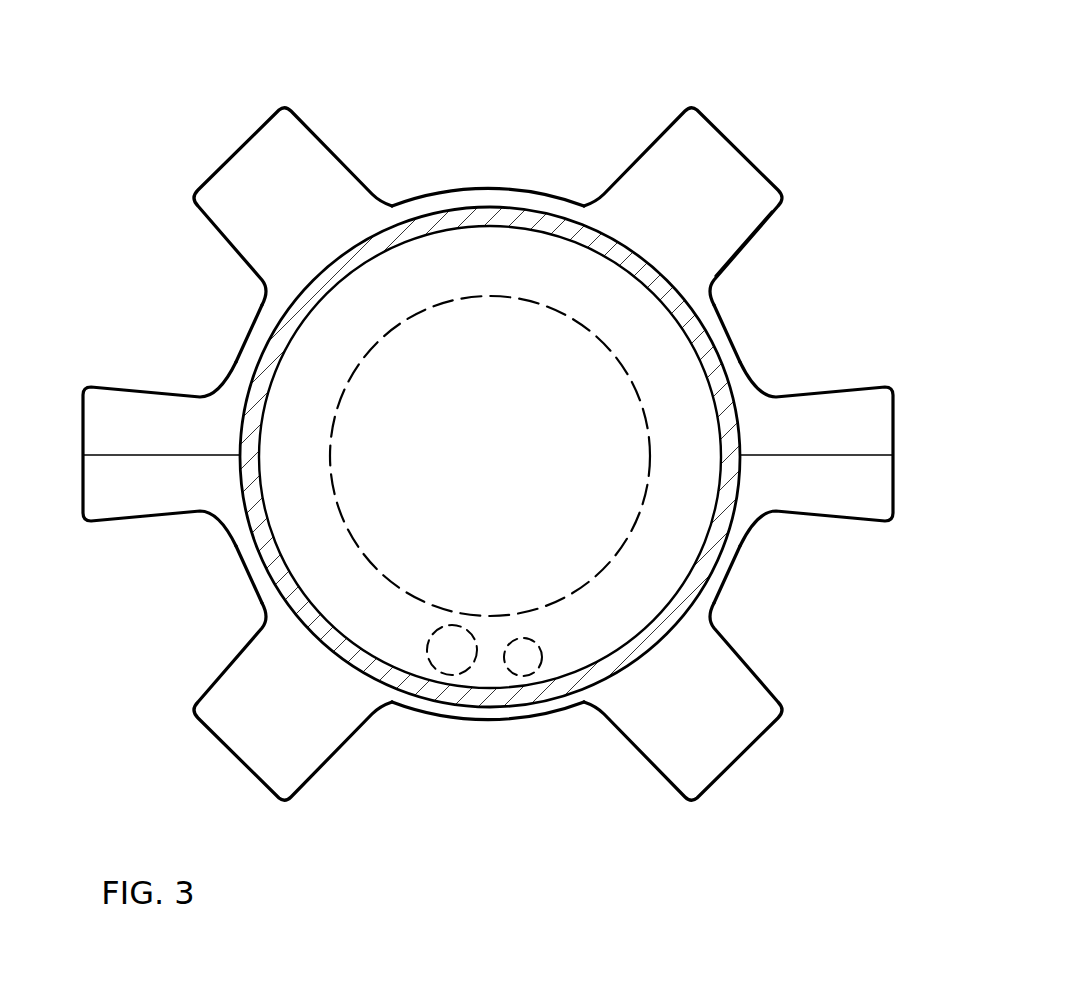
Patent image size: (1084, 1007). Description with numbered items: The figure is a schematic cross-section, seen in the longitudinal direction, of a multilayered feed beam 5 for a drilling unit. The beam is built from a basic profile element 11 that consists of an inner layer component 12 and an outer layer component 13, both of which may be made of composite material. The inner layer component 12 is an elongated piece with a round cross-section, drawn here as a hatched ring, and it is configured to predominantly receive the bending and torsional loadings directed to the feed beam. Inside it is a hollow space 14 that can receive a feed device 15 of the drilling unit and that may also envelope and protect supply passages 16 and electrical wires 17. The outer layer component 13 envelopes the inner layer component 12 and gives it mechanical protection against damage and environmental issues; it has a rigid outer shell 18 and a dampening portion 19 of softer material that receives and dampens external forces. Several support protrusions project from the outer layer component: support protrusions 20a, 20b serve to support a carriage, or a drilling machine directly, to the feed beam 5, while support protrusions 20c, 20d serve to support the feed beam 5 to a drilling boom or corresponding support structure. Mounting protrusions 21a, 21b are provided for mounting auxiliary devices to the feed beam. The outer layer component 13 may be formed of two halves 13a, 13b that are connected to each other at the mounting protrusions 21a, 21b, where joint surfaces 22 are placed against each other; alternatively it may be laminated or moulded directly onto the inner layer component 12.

The multilayered feed beam 5 is at (452, 92).
The basic profile element 11 is at (193, 288).
The inner layer component 12 is at (490, 228).
The outer layer component 13 is at (462, 190).
The half of the outer layer component 13a is at (782, 423).
The half of the outer layer component 13b is at (783, 486).
The hollow space 14 is at (305, 520).
The feed device 15 is at (333, 432).
The supply passages 16 is at (452, 652).
The electrical wires 17 is at (523, 660).
The outer shell 18 is at (747, 247).
The dampening portion 19 is at (642, 190).
The support protrusion 20a is at (265, 177).
The support protrusion 20b is at (718, 178).
The support protrusion 20c is at (245, 713).
The support protrusion 20d is at (727, 713).
The mounting protrusion 21a is at (149, 418).
The mounting protrusion 21b is at (813, 425).
The joint surfaces 22 is at (160, 457).